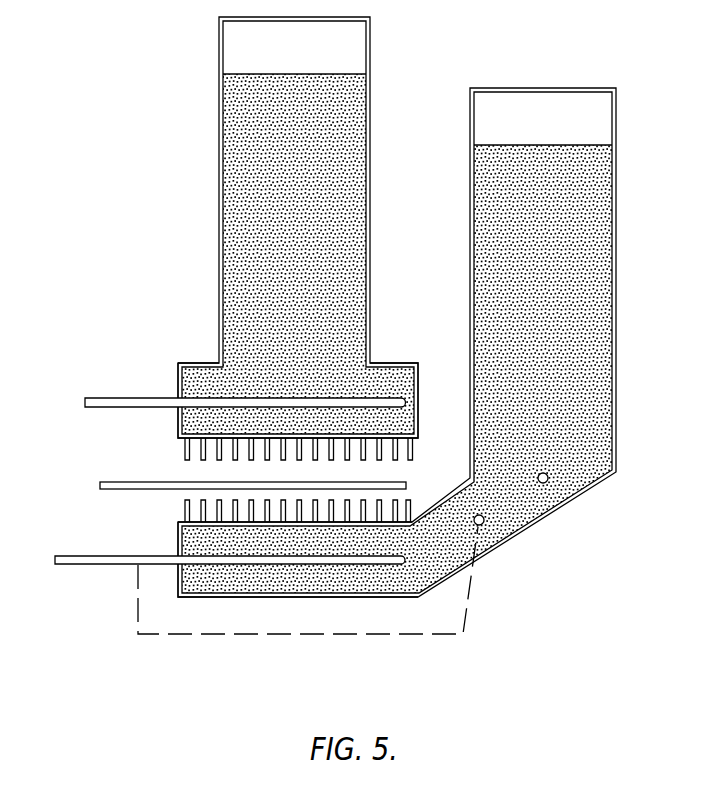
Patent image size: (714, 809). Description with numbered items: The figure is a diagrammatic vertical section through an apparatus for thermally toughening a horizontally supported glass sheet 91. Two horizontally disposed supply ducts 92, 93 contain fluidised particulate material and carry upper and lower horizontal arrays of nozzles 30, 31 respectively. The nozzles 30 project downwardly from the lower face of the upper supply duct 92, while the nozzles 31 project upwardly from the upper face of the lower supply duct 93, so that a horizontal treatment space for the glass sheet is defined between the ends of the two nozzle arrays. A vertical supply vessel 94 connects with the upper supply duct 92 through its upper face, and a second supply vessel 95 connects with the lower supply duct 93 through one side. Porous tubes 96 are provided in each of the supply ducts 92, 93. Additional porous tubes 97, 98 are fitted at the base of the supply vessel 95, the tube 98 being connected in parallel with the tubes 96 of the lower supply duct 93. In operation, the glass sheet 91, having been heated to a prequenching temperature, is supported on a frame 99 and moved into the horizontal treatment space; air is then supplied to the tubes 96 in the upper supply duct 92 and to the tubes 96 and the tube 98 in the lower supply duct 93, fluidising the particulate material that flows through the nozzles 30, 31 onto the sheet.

The upper horizontal array of nozzles 30 is at (410, 450).
The lower horizontal array of nozzles 31 is at (425, 498).
The glass sheet 91 is at (238, 492).
The upper supply duct 92 is at (176, 378).
The lower supply duct 93 is at (195, 536).
The vertical supply vessel 94 is at (235, 140).
The supply vessel 95 is at (492, 222).
The porous tubes 96 is at (378, 397).
The additional porous tube 97 is at (547, 483).
The additional porous tube 98 is at (483, 524).
The frame 99 is at (198, 481).